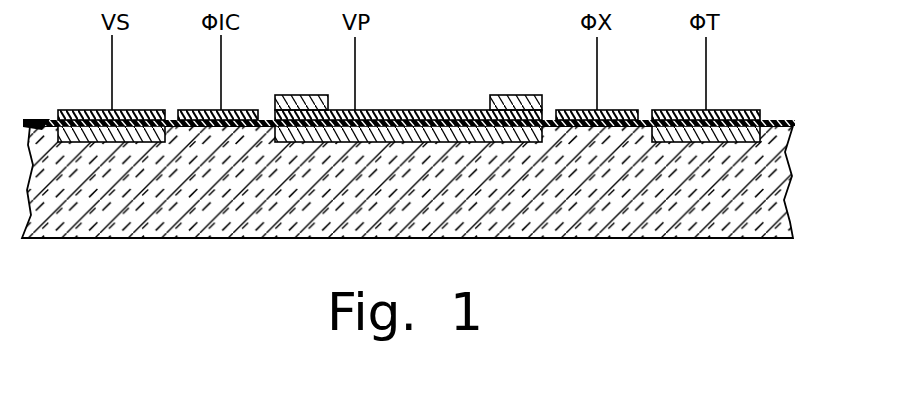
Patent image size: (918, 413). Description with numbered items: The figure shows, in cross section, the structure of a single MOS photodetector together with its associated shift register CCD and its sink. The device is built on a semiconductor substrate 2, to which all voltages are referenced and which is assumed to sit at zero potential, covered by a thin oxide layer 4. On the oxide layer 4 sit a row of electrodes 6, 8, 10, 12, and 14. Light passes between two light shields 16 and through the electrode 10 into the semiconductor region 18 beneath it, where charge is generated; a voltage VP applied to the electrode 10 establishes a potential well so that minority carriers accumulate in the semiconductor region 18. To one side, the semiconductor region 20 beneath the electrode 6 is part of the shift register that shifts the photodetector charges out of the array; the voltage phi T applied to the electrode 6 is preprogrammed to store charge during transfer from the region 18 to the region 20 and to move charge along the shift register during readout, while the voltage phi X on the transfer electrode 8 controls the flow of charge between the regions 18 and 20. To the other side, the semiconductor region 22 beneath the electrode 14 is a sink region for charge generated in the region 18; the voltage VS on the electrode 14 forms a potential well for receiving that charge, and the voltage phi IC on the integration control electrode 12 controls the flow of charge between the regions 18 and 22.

The semiconductor substrate 2 is at (585, 200).
The thin oxide layer 4 is at (795, 122).
The electrode 6 is at (731, 110).
The transfer electrode 8 is at (620, 110).
The electrode 10 is at (418, 110).
The integration control electrode 12 is at (246, 110).
The electrode 14 is at (152, 110).
The light shields 16 is at (305, 95).
The semiconductor region 18 is at (440, 143).
The semiconductor region 20 is at (717, 143).
The semiconductor region 22 is at (99, 143).